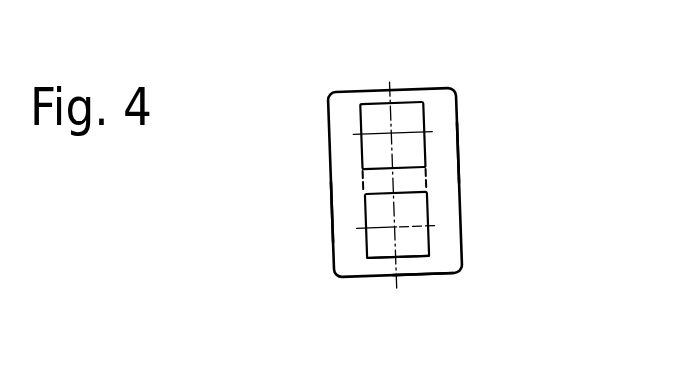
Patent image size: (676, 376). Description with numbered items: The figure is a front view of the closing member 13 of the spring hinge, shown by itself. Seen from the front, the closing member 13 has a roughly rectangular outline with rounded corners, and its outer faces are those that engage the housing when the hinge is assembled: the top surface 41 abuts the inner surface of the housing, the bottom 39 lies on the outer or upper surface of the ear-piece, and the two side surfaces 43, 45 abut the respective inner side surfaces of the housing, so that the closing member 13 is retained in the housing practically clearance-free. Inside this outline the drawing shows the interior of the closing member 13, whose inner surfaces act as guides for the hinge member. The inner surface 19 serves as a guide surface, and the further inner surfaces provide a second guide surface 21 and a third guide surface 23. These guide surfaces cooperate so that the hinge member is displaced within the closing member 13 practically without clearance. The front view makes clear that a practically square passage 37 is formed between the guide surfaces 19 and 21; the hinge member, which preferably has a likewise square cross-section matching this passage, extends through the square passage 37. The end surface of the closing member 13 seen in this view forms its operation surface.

The closing member 13 is at (308, 162).
The top surface 41 is at (368, 89).
The third guide surface 23 is at (403, 136).
The side surface 45 is at (461, 153).
The second guide surface 21 is at (410, 201).
The square passage 37 is at (410, 242).
The bottom 39 is at (427, 276).
The side surface 43 is at (326, 205).
The inner surface 19 is at (380, 260).